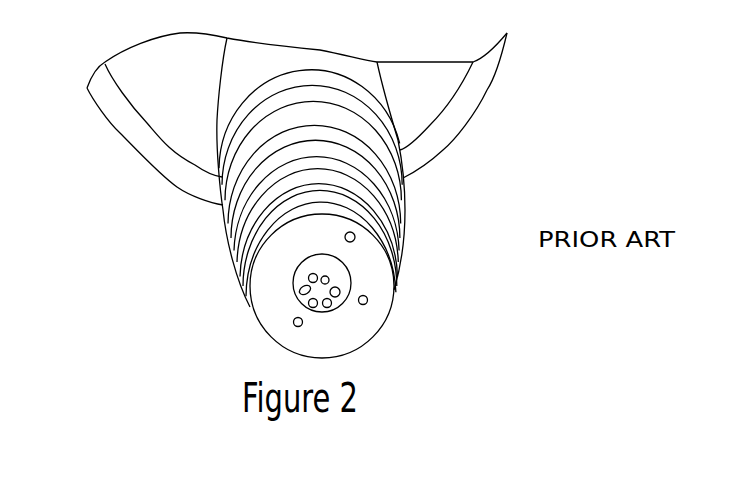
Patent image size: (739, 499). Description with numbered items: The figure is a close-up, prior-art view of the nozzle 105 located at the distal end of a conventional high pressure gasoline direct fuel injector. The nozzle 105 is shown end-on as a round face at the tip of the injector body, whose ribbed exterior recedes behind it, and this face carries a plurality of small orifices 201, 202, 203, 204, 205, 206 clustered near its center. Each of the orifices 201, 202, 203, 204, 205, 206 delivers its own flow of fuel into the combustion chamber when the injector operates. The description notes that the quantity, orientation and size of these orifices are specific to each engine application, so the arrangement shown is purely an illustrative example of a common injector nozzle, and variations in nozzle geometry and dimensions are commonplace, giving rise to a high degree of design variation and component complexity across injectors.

The nozzle 105 is at (384, 279).
The orifice 201 is at (311, 274).
The orifice 202 is at (299, 289).
The orifice 203 is at (308, 304).
The orifice 204 is at (330, 307).
The orifice 205 is at (339, 295).
The orifice 206 is at (325, 275).